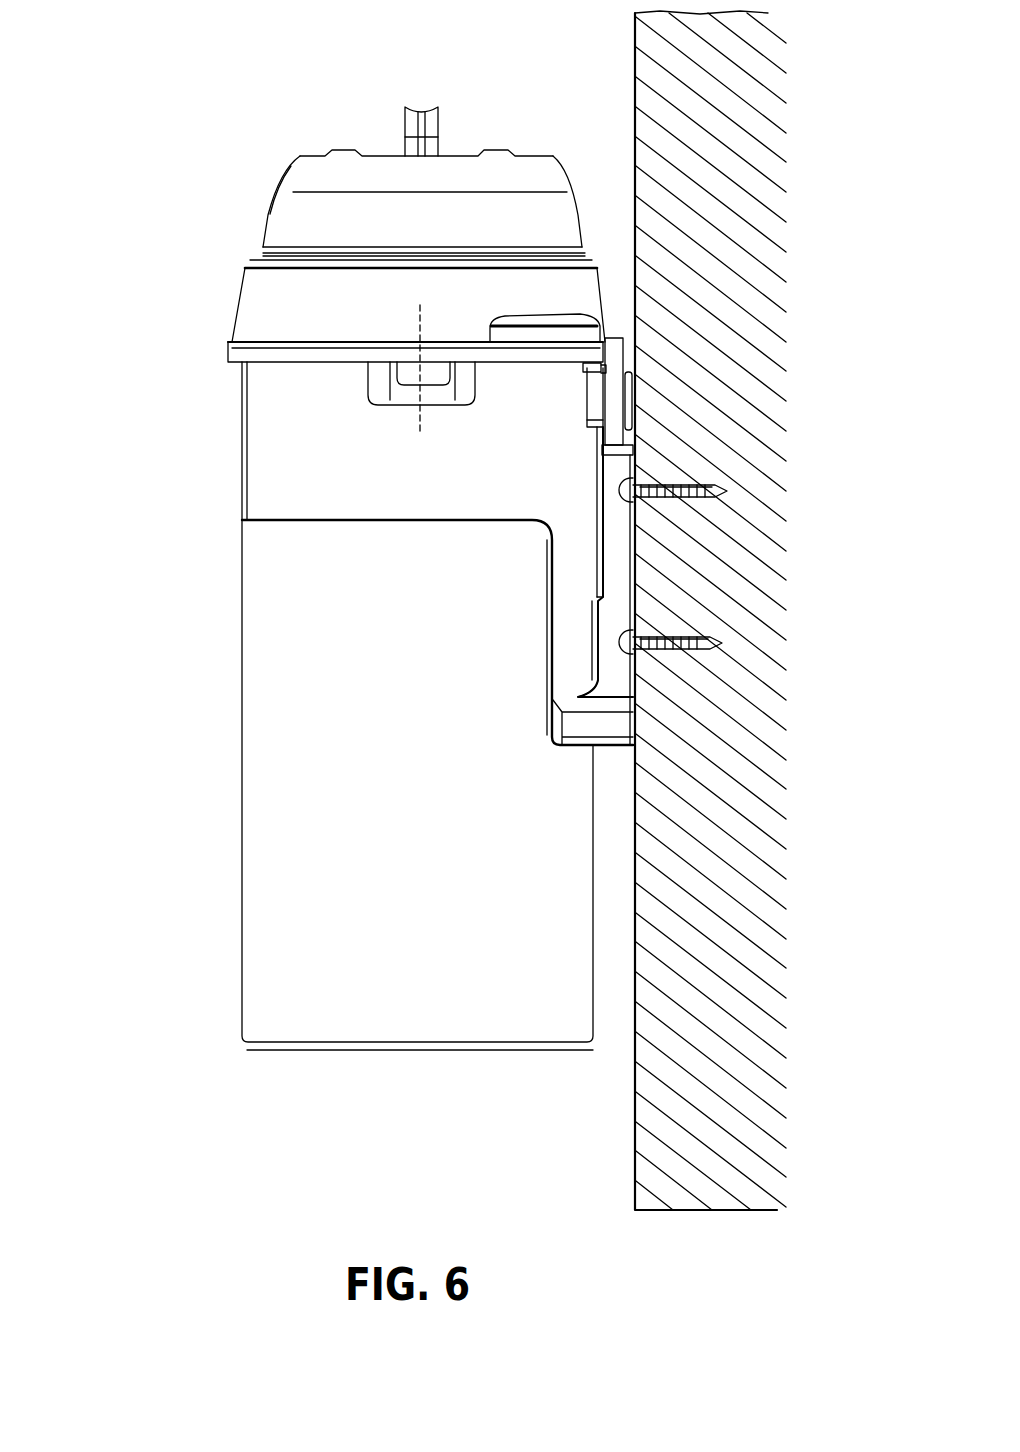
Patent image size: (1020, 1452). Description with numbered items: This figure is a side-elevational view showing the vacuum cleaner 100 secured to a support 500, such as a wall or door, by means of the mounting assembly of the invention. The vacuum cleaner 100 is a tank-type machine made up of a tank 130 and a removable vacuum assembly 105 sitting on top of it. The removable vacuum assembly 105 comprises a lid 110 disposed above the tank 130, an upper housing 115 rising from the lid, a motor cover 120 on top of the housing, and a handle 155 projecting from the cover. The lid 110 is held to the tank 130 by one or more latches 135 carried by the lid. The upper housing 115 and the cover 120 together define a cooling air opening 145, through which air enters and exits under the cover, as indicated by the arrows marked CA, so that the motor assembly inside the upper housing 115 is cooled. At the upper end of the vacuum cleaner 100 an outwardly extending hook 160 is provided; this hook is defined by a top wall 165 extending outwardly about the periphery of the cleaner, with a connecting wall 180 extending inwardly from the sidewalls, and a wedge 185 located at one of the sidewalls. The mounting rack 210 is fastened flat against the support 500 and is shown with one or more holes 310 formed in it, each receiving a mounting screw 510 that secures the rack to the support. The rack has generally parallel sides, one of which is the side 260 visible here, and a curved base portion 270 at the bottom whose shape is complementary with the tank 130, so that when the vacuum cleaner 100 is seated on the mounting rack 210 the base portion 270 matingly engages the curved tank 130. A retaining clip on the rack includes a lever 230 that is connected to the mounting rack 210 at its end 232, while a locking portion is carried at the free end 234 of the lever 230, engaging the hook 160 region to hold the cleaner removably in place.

The vacuum cleaner 100 is at (523, 133).
The removable vacuum assembly 105 is at (163, 298).
The lid 110 is at (228, 357).
The upper housing 115 is at (233, 327).
The motor cover 120 is at (265, 226).
The tank 130 is at (256, 643).
The latches 135 is at (402, 385).
The cooling air opening 145 is at (620, 212).
The handle 155 is at (405, 133).
The hook 160 is at (648, 405).
The top wall 165 is at (603, 370).
The connecting wall 180 is at (633, 385).
The wedge 185 is at (585, 391).
The mounting rack 210 is at (627, 548).
The lever 230 is at (600, 398).
The end 232 is at (598, 438).
The free end 234 is at (606, 373).
The side 260 is at (597, 548).
The base portion 270 is at (577, 697).
The holes 310 is at (622, 480).
The support 500 is at (634, 64).
The mounting screws 510 is at (690, 482).